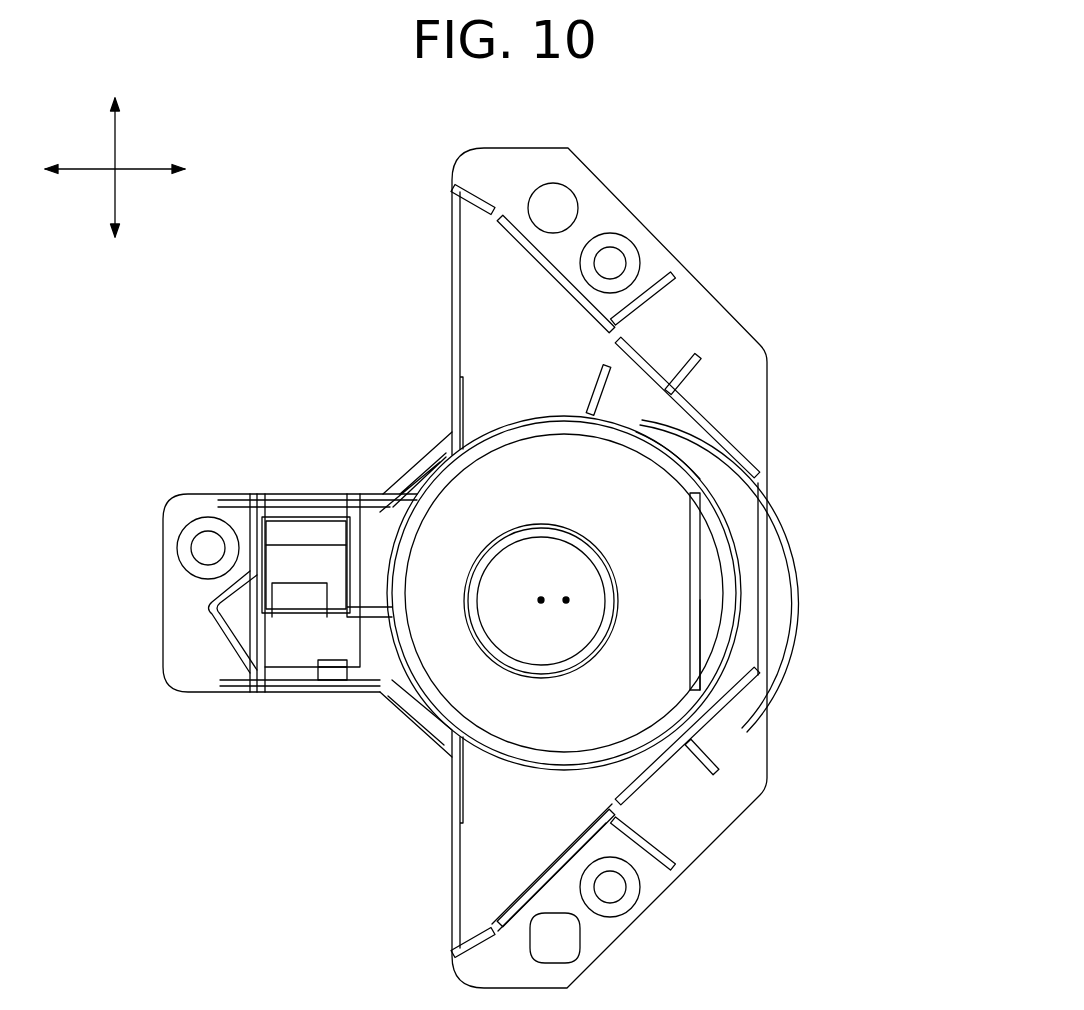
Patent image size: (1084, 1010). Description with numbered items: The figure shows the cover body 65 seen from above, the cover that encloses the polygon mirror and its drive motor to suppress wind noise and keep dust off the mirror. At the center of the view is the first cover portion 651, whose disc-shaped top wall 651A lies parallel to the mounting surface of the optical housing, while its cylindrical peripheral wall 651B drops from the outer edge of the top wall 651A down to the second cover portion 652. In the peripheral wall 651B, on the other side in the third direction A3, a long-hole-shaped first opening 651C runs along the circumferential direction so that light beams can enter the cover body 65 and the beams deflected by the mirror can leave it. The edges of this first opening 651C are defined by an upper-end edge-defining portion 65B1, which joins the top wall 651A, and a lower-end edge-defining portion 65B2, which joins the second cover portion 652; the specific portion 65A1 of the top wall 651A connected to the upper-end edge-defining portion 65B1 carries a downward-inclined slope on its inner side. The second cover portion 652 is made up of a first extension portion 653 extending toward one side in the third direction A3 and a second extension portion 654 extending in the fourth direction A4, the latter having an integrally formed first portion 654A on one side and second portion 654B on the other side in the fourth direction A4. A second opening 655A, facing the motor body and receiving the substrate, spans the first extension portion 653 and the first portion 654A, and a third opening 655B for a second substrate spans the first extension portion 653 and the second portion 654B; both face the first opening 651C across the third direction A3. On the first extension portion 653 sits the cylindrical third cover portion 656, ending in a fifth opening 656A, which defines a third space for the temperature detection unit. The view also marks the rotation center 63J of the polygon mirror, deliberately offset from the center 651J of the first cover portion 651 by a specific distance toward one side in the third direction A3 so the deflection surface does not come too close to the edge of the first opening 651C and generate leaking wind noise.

The cover body 65 is at (735, 229).
The first cover portion 651 is at (888, 768).
The top wall 651A is at (640, 700).
The peripheral wall 651B is at (655, 745).
The first opening 651C is at (724, 523).
The center of the first cover portion 651J is at (572, 595).
The rotation center 63J is at (538, 594).
The second cover portion 652 is at (553, 888).
The first extension portion 653 is at (371, 660).
The second extension portion 654 is at (475, 571).
The first portion 654A is at (484, 855).
The second portion 654B is at (484, 240).
The second opening 655A is at (415, 748).
The third opening 655B is at (425, 408).
The third cover portion 656 is at (250, 610).
The fifth opening 656A is at (293, 573).
The specific portion 65A1 is at (711, 648).
The upper-end edge-defining portion 65B1 is at (736, 616).
The lower-end edge-defining portion 65B2 is at (746, 548).
The third direction A3 is at (140, 170).
The fourth direction A4 is at (115, 137).